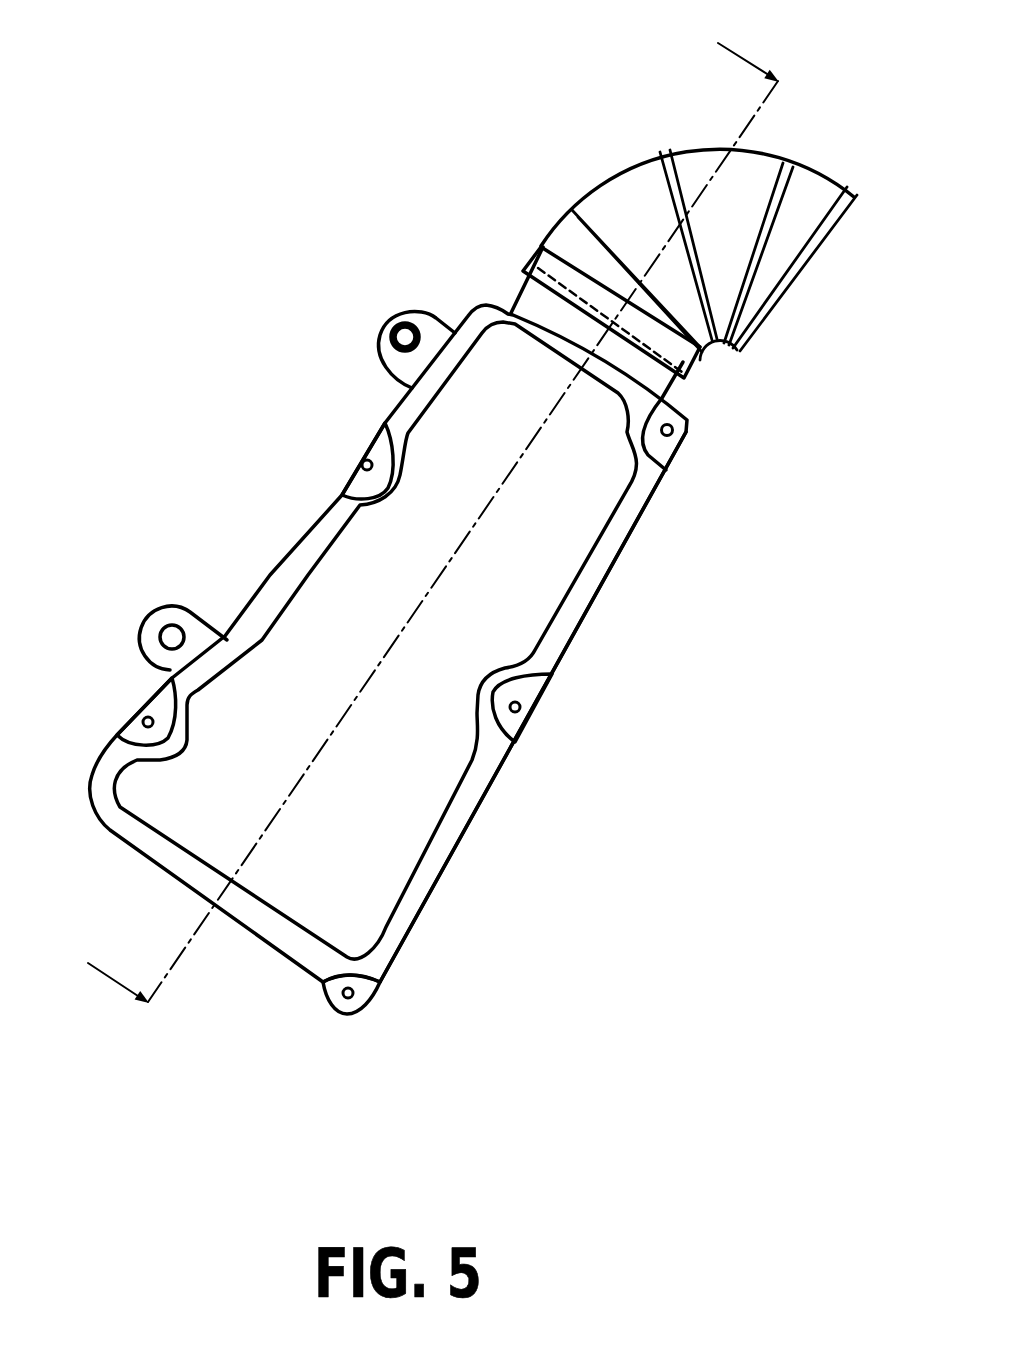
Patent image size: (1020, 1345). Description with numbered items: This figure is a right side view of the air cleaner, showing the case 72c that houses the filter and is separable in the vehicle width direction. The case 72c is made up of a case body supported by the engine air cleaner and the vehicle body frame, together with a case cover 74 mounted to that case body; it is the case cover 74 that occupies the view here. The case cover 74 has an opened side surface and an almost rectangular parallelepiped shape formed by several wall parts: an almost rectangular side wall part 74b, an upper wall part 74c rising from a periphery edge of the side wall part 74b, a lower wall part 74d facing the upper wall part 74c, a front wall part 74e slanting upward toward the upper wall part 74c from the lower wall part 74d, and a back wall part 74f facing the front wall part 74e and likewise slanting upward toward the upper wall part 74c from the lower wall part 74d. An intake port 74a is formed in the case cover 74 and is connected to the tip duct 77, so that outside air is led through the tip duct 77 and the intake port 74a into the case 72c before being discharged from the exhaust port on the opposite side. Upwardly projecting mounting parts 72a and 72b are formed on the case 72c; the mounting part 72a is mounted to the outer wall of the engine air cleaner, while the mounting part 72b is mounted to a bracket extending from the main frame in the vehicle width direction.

The mounting part 72a is at (402, 318).
The mounting part 72b is at (162, 618).
The case 72c is at (182, 285).
The case cover 74 is at (487, 305).
The intake port 74a is at (693, 386).
The side wall part 74b is at (522, 585).
The upper wall part 74c is at (568, 385).
The lower wall part 74d is at (242, 930).
The front wall part 74e is at (472, 822).
The back wall part 74f is at (278, 585).
The tip duct 77 is at (822, 172).